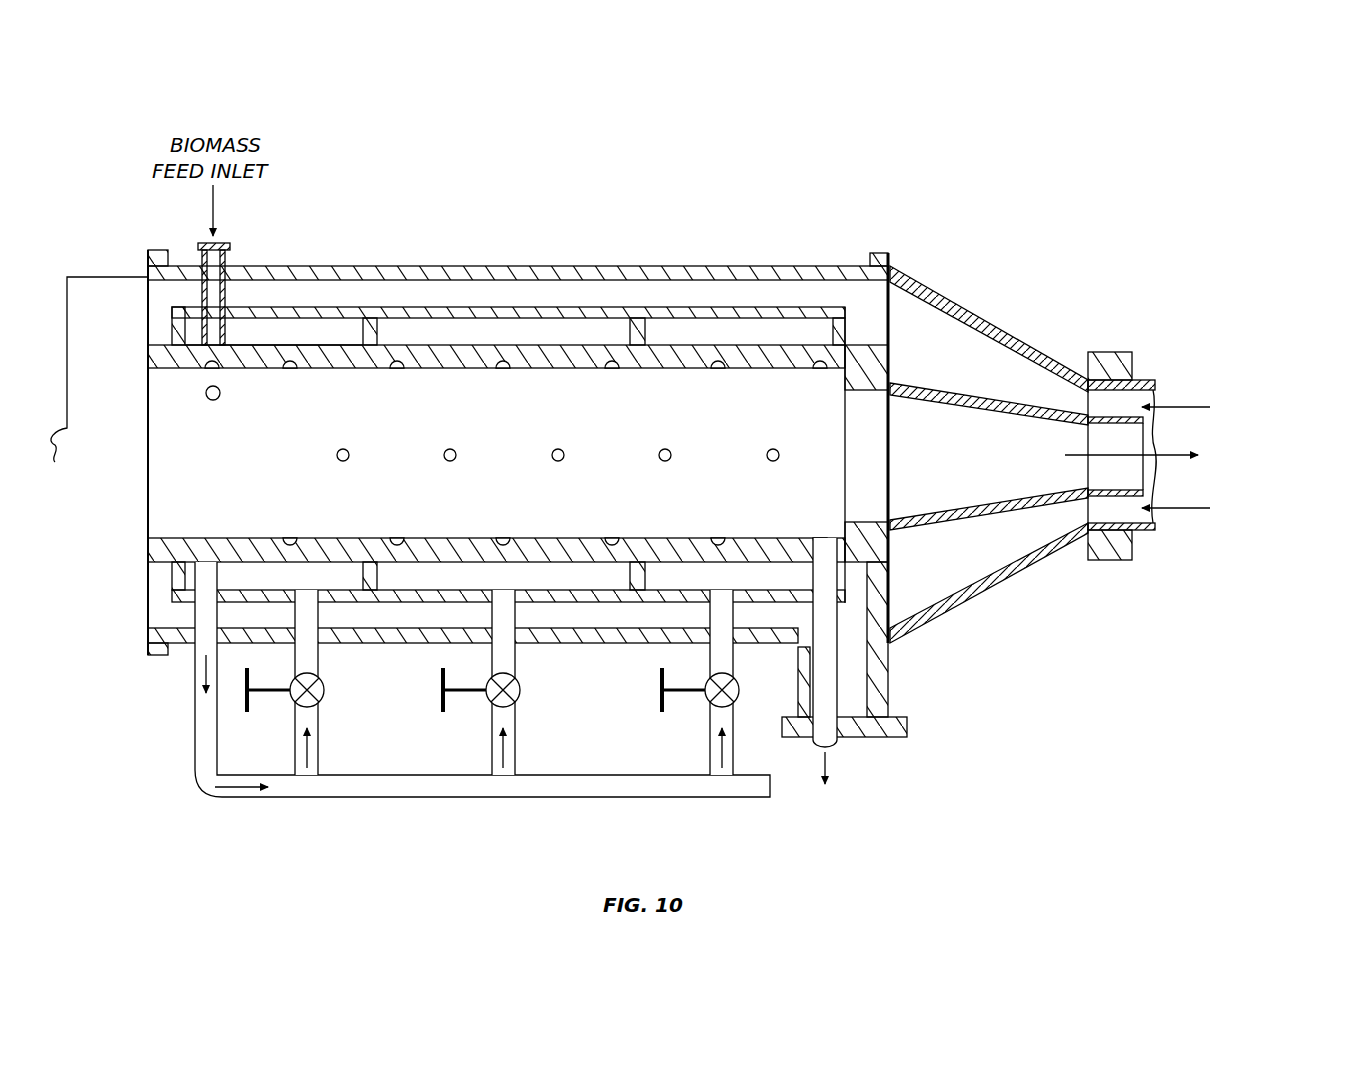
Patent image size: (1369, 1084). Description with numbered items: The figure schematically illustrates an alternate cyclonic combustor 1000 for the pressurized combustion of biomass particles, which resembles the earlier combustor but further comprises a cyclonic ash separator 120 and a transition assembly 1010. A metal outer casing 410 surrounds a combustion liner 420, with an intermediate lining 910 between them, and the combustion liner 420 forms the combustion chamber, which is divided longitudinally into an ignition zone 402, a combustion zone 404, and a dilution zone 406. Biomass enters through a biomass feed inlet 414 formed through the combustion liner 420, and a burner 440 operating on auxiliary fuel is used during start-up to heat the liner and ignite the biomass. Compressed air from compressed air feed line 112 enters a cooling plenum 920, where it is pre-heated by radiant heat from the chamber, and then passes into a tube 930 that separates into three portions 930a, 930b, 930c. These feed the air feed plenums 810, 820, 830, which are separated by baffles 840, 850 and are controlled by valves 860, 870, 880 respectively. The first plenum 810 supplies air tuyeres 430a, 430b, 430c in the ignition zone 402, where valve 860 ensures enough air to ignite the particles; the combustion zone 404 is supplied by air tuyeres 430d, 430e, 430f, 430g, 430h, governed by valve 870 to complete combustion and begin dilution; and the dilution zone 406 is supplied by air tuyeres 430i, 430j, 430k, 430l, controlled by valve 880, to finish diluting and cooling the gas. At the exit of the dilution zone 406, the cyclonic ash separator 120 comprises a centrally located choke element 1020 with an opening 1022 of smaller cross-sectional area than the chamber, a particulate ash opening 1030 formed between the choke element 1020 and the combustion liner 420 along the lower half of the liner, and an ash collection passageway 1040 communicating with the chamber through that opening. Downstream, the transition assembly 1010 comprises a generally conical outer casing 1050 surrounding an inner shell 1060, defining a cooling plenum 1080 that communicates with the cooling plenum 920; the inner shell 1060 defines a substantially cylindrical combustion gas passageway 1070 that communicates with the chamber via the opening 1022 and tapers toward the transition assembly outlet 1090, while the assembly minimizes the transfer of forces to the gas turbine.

The cyclonic combustor 1000 is at (812, 186).
The burner 440 is at (113, 276).
The biomass feed inlet 414 is at (200, 255).
The intermediate lining 910 is at (238, 262).
The outer casing 410 is at (283, 262).
The air feed plenum 810 is at (322, 318).
The baffle 840 is at (398, 295).
The cooling plenum 920 is at (453, 290).
The combustion zone 404 is at (467, 393).
The air feed plenum 820 is at (507, 335).
The baffle 850 is at (598, 320).
The air feed plenum 830 is at (687, 403).
The dilution zone 406 is at (727, 330).
The ignition zone 402 is at (193, 495).
The combustion liner 420 is at (207, 622).
The air tuyere 430a is at (219, 399).
The air tuyere 430b is at (290, 371).
The air tuyere 430c is at (349, 457).
The air tuyere 430d is at (397, 371).
The air tuyere 430e is at (456, 457).
The air tuyere 430f is at (503, 371).
The air tuyere 430g is at (564, 457).
The air tuyere 430h is at (612, 371).
The air tuyere 430i is at (671, 457).
The air tuyere 430j is at (718, 371).
The air tuyere 430k is at (778, 451).
The air tuyere 430l is at (820, 371).
The valve 860 is at (290, 702).
The valve 870 is at (486, 703).
The valve 880 is at (705, 703).
The tube 930 is at (265, 800).
The tube portion 930a is at (320, 730).
The tube portion 930b is at (517, 730).
The tube portion 930c is at (710, 658).
The ash collection passageway 1040 is at (858, 672).
The cyclonic ash separator 120 is at (942, 690).
The cooling plenum 1080 is at (940, 322).
The choke element 1020 is at (868, 375).
The opening 1022 is at (873, 462).
The particulate ash opening 1030 is at (873, 587).
The inner shell 1060 is at (1013, 510).
The combustion gas passageway 1070 is at (1050, 477).
The outer casing 1050 is at (1033, 347).
The transition assembly outlet 1090 is at (1112, 435).
The transition assembly 1010 is at (1134, 311).
The compressed air feed line 112 is at (1192, 404).